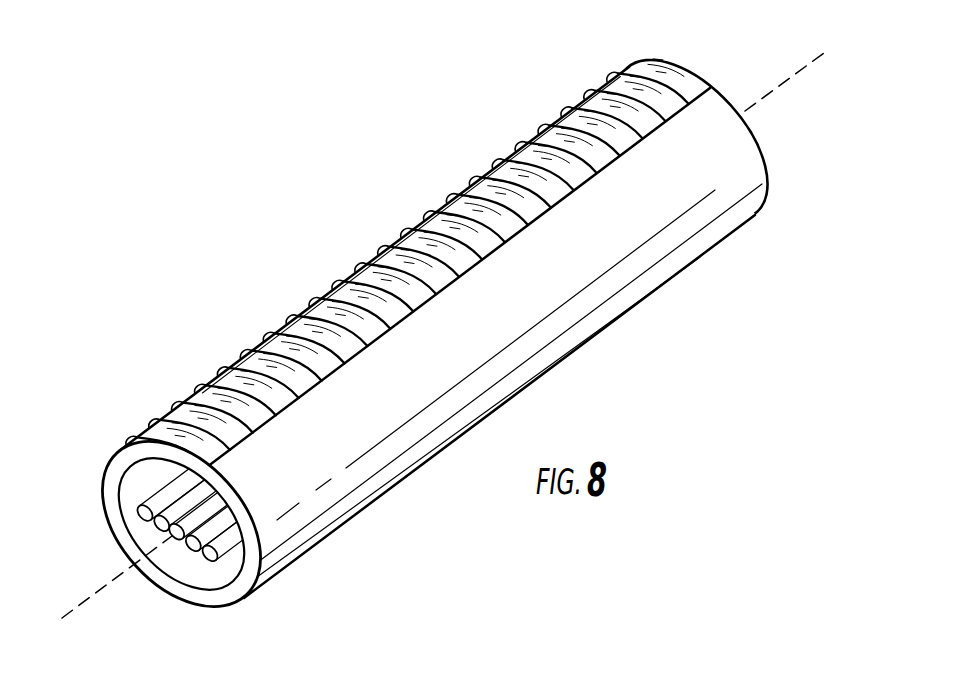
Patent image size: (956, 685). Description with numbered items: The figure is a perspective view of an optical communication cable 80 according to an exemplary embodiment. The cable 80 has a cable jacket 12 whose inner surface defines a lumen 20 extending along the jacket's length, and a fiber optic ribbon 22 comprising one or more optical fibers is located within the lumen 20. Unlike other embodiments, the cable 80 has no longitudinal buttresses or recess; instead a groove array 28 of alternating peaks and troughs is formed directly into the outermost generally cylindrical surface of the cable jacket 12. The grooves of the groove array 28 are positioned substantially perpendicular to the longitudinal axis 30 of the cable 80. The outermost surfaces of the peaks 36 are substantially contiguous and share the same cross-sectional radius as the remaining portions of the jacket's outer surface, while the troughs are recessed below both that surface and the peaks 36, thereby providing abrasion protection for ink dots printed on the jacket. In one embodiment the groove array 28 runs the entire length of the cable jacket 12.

The cable jacket 12 is at (112, 472).
The lumen 20 is at (189, 560).
The fiber optic ribbon 22 is at (136, 513).
The groove array 28 is at (246, 378).
The longitudinal axis 30 is at (752, 105).
The peaks 36 is at (480, 182).
The optical communication cable 80 is at (400, 191).